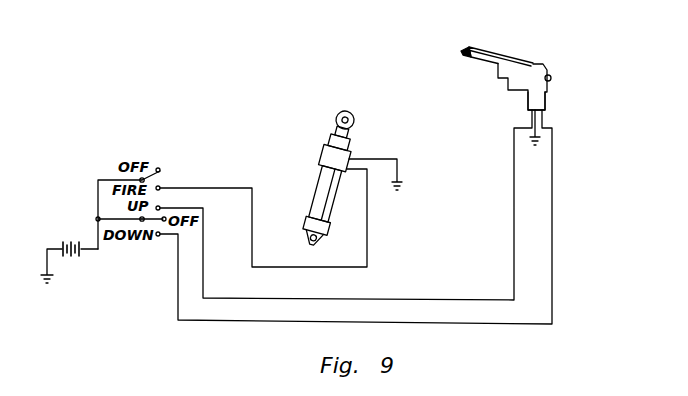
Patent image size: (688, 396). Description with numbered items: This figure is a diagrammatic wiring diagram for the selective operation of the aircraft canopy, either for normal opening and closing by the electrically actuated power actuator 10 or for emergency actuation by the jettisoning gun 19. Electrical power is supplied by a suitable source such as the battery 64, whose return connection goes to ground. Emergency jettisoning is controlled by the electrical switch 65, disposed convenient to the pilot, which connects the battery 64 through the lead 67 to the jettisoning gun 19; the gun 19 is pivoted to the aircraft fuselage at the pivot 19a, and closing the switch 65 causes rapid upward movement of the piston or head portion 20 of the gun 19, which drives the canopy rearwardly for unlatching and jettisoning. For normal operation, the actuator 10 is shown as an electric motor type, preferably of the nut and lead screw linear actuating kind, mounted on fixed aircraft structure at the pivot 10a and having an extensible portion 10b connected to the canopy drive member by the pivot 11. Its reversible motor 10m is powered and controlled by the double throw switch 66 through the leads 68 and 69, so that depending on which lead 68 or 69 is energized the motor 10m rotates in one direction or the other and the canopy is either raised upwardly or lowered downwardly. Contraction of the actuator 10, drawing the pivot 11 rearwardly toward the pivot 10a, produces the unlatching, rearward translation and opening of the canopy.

The power actuator 10 is at (514, 86).
The pivot 10a is at (552, 79).
The extensible portion 10b is at (491, 49).
The motor 10m is at (539, 100).
The pivot 11 is at (461, 53).
The jettisoning gun 19 is at (319, 173).
The pivot 19a is at (309, 239).
The piston or head portion 20 is at (356, 122).
The battery 64 is at (70, 237).
The electrical switch 65 is at (167, 174).
The double throw switch 66 is at (162, 211).
The lead 67 is at (252, 208).
The lead 68 is at (205, 252).
The lead 69 is at (178, 291).